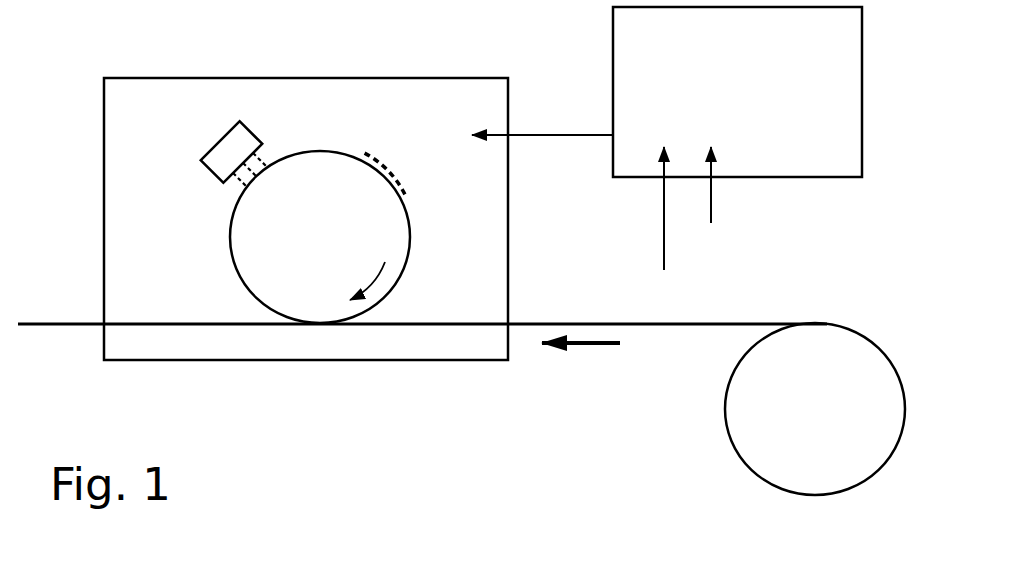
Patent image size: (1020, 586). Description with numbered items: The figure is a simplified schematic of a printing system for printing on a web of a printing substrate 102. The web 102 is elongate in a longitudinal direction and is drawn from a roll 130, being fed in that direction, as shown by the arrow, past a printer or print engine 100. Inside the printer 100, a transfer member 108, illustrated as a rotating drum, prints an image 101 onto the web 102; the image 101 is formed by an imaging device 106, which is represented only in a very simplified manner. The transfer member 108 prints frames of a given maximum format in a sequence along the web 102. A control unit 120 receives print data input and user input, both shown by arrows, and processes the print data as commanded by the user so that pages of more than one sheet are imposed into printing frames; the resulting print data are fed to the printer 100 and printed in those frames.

The printer 100 is at (160, 59).
The image 101 is at (397, 156).
The web of printing substrate 102 is at (441, 334).
The imaging device 106 is at (227, 148).
The transfer member 108 is at (392, 243).
The control unit 120 is at (610, 27).
The roll 130 is at (747, 397).